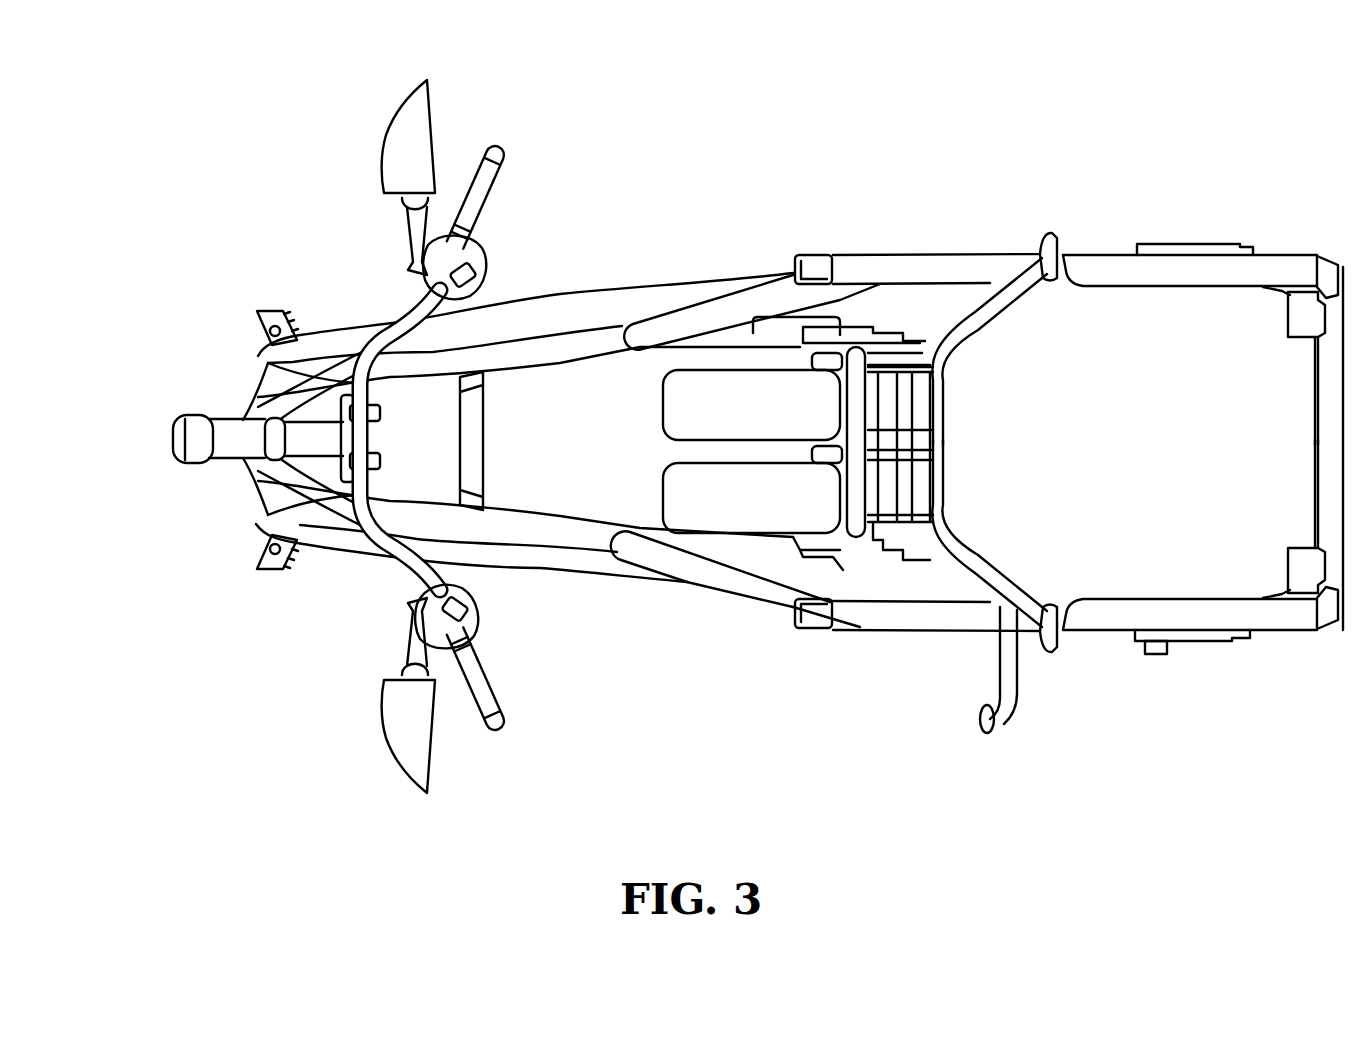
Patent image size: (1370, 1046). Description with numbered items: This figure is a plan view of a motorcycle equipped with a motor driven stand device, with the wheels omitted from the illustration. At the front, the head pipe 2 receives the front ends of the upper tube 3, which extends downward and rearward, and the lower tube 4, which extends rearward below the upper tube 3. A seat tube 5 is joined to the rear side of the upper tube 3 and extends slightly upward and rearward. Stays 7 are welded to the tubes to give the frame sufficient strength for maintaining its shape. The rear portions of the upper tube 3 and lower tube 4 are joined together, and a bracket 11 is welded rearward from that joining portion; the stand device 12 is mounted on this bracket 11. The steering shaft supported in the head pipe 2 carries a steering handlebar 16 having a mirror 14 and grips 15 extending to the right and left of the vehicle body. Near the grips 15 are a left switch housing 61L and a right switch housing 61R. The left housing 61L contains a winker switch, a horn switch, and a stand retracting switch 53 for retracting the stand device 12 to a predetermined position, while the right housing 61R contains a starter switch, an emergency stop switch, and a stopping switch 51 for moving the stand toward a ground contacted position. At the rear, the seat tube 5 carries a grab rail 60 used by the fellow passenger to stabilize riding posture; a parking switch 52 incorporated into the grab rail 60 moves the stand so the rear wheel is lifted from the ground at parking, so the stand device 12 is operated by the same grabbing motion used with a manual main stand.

The head pipe 2 is at (232, 418).
The upper tube 3 is at (570, 345).
The lower tube 4 is at (503, 325).
The seat tube 5 is at (933, 262).
The stay 7 is at (262, 368).
The bracket (extension portion) 11 is at (862, 340).
The stand device 12 is at (959, 419).
The mirror 14 is at (417, 120).
The grip 15 is at (490, 183).
The steering handlebar 16 is at (366, 530).
The stopping switch 51 is at (493, 237).
The parking switch 52 is at (1160, 655).
The stand retracting switch 53 is at (493, 650).
The grab rail 60 is at (1220, 647).
The right switch housing 61R is at (415, 294).
The left switch housing 61L is at (417, 587).